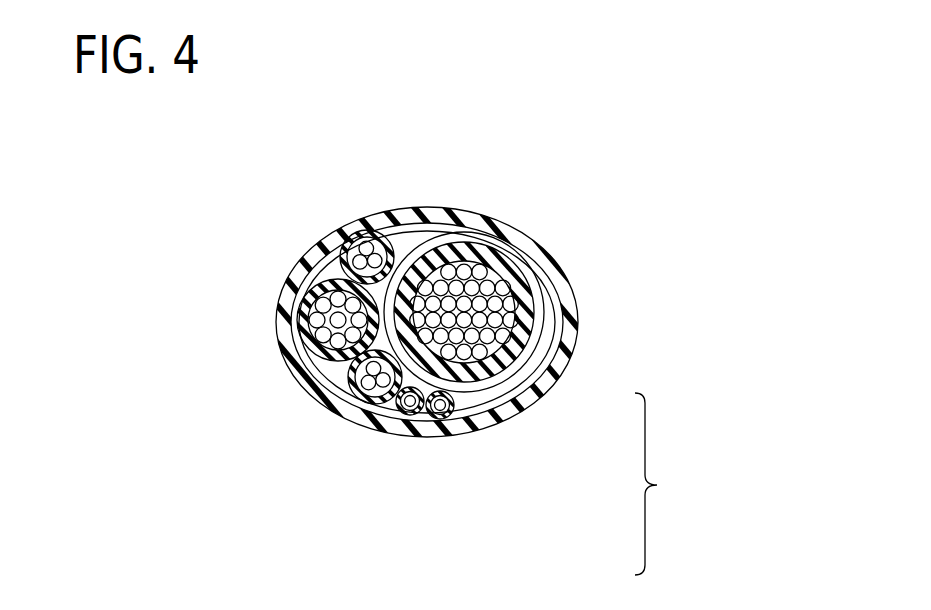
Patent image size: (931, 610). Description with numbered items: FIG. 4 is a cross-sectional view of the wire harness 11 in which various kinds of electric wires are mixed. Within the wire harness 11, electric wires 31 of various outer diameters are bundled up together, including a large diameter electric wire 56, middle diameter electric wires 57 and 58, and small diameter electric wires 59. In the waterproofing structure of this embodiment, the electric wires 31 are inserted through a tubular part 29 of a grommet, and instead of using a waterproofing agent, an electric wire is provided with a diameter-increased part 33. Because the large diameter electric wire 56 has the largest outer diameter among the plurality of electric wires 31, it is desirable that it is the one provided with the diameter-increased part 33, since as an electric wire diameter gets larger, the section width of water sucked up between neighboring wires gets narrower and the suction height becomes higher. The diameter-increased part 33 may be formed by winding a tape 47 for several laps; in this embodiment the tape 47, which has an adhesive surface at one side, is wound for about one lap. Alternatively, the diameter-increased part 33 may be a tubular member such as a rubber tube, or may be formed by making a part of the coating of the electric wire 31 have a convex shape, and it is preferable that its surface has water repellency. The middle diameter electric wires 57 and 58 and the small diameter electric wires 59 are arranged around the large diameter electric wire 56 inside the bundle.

The wire harness 11 is at (332, 206).
The tubular part 29 is at (297, 371).
The electric wires 31 is at (659, 484).
The diameter-increased part 33 is at (548, 280).
The tape 47 is at (547, 327).
The large diameter electric wire 56 is at (516, 364).
The middle diameter electric wire 57 is at (338, 366).
The middle diameter electric wire 58 is at (397, 231).
The small diameter electric wires 59 is at (465, 407).